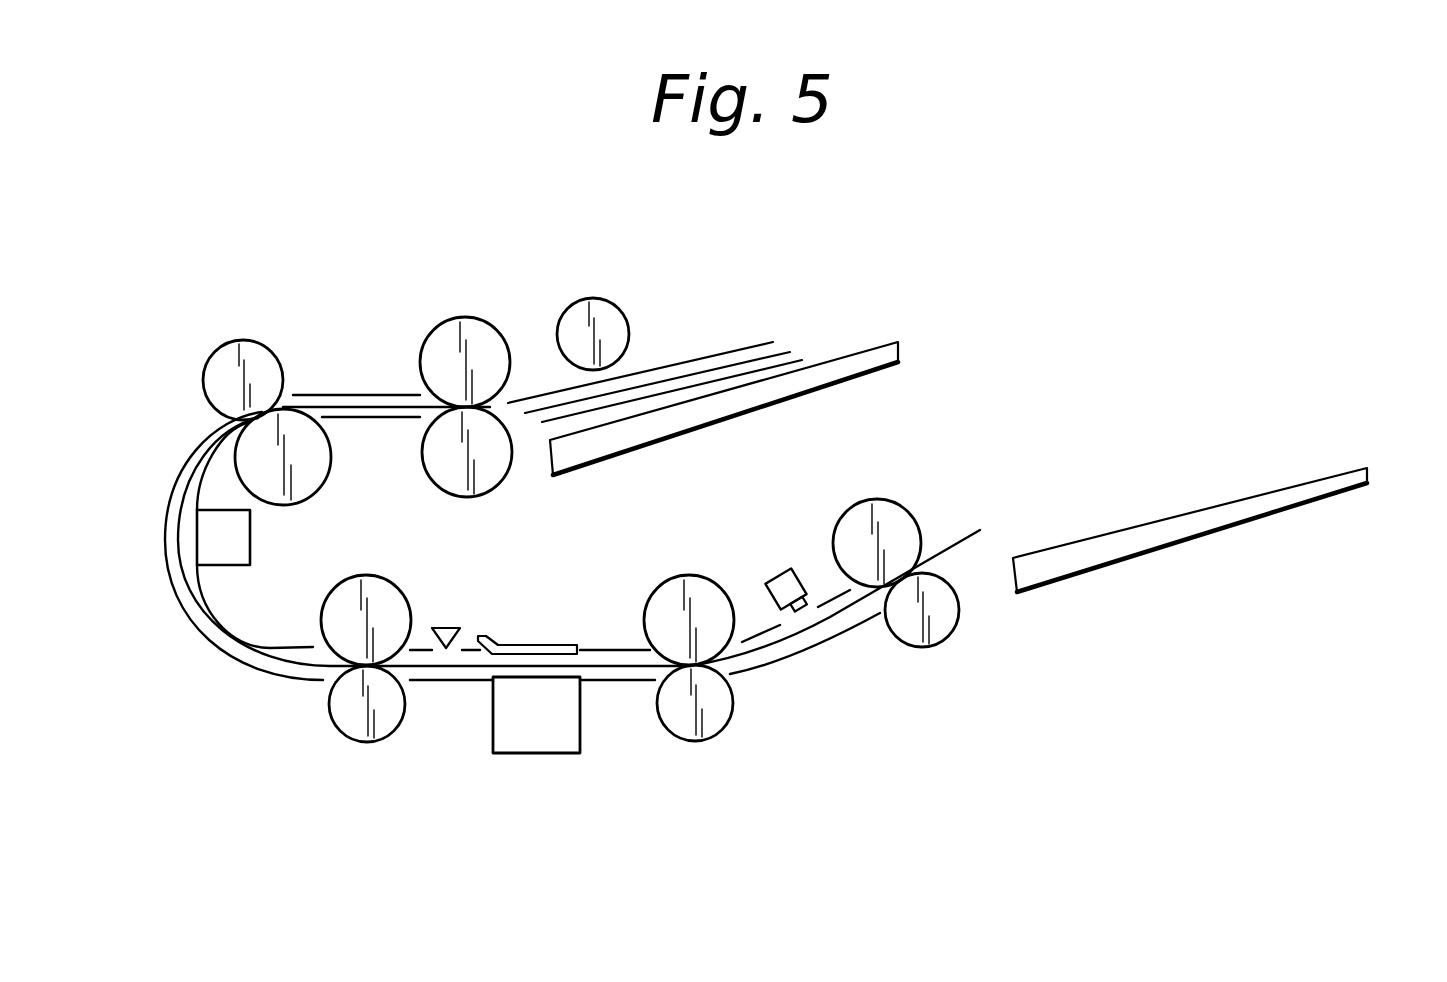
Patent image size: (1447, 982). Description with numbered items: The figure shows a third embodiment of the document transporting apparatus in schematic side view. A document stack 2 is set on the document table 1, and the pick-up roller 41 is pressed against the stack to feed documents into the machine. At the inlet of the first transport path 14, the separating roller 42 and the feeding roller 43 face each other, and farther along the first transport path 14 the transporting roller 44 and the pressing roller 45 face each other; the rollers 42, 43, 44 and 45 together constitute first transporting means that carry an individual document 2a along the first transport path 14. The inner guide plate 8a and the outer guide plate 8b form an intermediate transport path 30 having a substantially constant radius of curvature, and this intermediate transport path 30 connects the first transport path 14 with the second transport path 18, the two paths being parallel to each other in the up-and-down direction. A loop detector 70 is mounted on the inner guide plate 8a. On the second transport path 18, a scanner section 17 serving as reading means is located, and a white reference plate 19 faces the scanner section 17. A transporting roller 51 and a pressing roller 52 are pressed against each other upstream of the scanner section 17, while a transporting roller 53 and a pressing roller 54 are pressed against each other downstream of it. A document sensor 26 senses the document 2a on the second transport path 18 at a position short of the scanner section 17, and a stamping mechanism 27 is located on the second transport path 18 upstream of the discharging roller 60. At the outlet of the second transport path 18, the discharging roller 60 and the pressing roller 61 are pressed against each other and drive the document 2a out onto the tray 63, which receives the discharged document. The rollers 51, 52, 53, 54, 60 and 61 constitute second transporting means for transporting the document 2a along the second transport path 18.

The document table 1 is at (900, 353).
The document stack 2 is at (693, 338).
The document 2a is at (727, 352).
The inner guide plate 8a is at (210, 598).
The outer guide plate 8b is at (168, 493).
The first transport path 14 is at (367, 397).
The scanner section 17 is at (545, 722).
The second transport path 18 is at (443, 668).
The white reference plate 19 is at (578, 653).
The document sensor 26 is at (445, 626).
The stamping mechanism 27 is at (776, 571).
The intermediate transport path 30 is at (165, 545).
The pick-up roller 41 is at (607, 317).
The separating roller 42 is at (433, 467).
The feeding roller 43 is at (450, 333).
The transporting roller 44 is at (250, 467).
The pressing roller 45 is at (217, 373).
The transporting roller 51 is at (330, 620).
The pressing roller 52 is at (347, 715).
The transporting roller 53 is at (713, 633).
The pressing roller 54 is at (720, 705).
The discharging roller 60 is at (898, 533).
The pressing roller 61 is at (943, 612).
The tray 63 is at (1348, 482).
The loop detector 70 is at (227, 540).